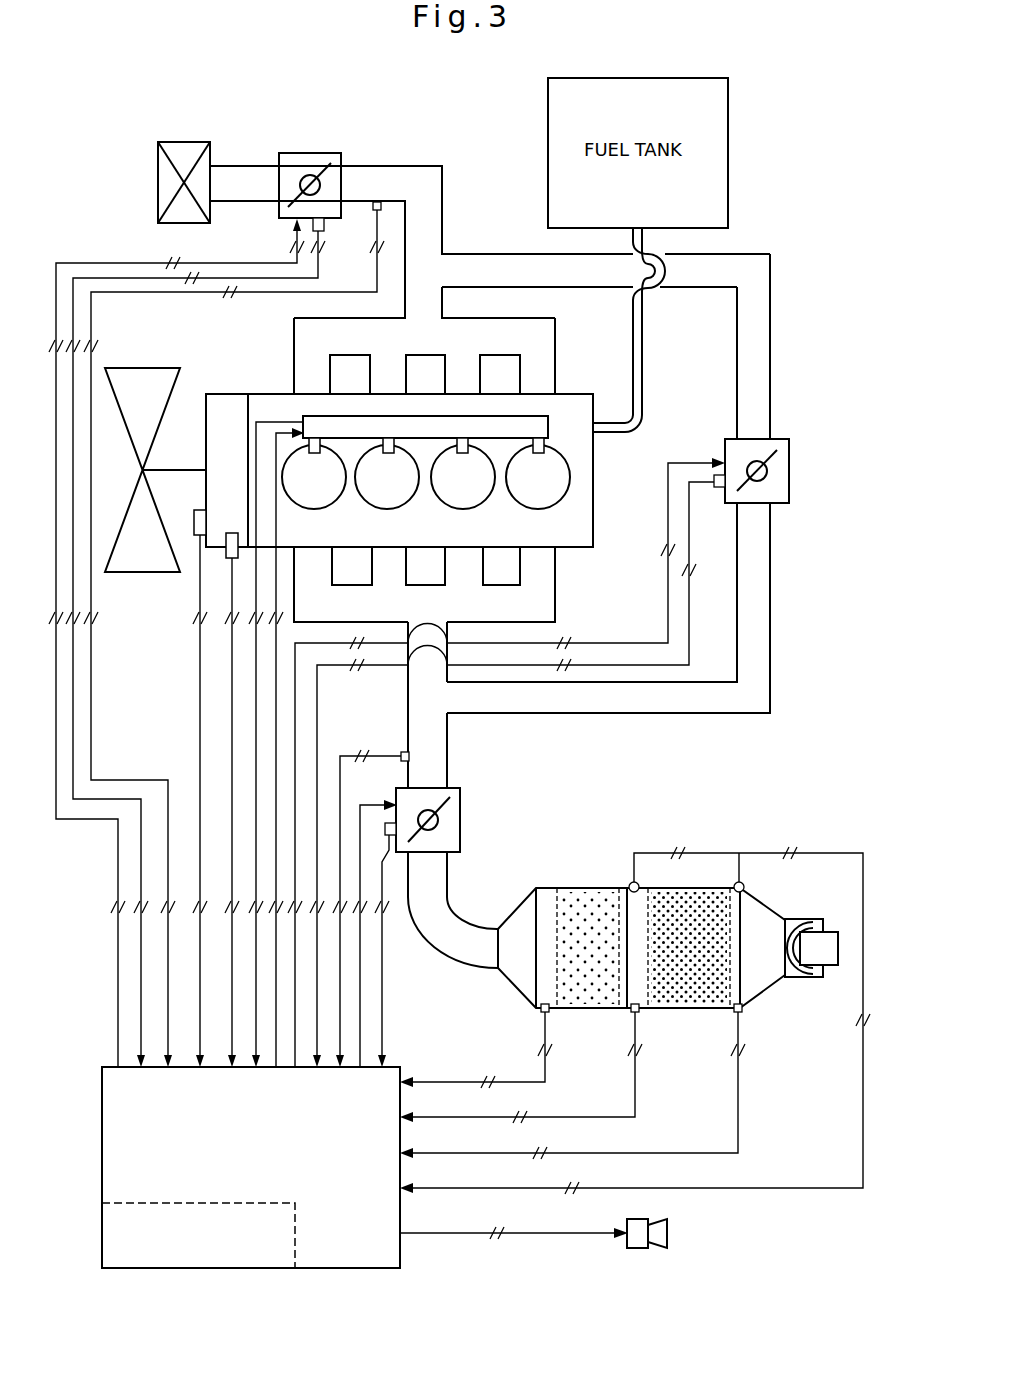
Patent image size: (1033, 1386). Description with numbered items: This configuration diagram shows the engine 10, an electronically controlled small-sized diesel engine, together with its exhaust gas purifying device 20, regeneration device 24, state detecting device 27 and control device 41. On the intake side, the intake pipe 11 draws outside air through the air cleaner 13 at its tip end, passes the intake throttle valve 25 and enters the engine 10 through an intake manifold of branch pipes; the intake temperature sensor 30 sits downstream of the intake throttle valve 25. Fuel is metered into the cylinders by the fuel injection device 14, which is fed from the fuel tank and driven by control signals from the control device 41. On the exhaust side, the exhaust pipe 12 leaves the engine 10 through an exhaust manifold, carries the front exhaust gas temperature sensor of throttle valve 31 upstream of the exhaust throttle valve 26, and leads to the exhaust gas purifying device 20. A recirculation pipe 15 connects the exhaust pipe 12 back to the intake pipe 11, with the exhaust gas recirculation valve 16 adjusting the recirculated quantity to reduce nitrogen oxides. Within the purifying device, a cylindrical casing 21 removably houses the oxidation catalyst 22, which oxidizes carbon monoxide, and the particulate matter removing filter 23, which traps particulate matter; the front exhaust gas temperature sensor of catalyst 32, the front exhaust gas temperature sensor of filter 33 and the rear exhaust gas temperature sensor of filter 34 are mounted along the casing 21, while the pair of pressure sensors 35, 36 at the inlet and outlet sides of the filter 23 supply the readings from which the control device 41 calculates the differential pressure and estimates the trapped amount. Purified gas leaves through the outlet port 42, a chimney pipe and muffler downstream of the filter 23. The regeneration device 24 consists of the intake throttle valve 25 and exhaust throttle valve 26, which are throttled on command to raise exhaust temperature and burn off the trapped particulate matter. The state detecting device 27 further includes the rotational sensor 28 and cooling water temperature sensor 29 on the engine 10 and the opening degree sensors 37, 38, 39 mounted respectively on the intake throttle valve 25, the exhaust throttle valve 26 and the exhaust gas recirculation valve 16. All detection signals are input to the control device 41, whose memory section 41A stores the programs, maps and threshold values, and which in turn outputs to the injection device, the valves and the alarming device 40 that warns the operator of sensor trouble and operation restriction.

The engine 10 is at (582, 525).
The intake pipe 11 is at (437, 170).
The exhaust pipe 12 is at (433, 753).
The air cleaner 13 is at (188, 151).
The fuel injection device 14 is at (538, 425).
The recirculation pipe 15 is at (758, 557).
The exhaust gas recirculation valve 16 is at (785, 457).
The exhaust gas purifying device 20 is at (556, 880).
The casing 21 is at (645, 1010).
The oxidation catalyst 22 is at (586, 893).
The particulate matter removing filter 23 is at (701, 1004).
The regeneration device 24 is at (327, 140).
The intake throttle valve 25 is at (292, 162).
The exhaust throttle valve 26 is at (462, 846).
The state detecting device 27 is at (667, 911).
The rotational sensor 28 is at (198, 523).
The cooling water temperature sensor 29 is at (225, 553).
The intake temperature sensor 30 is at (376, 202).
The front exhaust gas temperature sensor of throttle valve 31 is at (401, 752).
The front exhaust gas temperature sensor of catalyst 32 is at (543, 1014).
The front exhaust gas temperature sensor of filter 33 is at (633, 1014).
The rear exhaust gas temperature sensor of filter 34 is at (742, 1013).
The pressure sensor 35 is at (630, 881).
The pressure sensor 36 is at (746, 884).
The intake throttle valve opening degree sensor 37 is at (325, 228).
The exhaust throttle valve opening degree sensor 38 is at (390, 840).
The exhaust gas recirculation valve opening degree sensor 39 is at (720, 488).
The alarming device 40 is at (657, 1233).
The control device 41 is at (117, 1113).
The memory section 41A is at (110, 1240).
The outlet port 42 is at (833, 960).